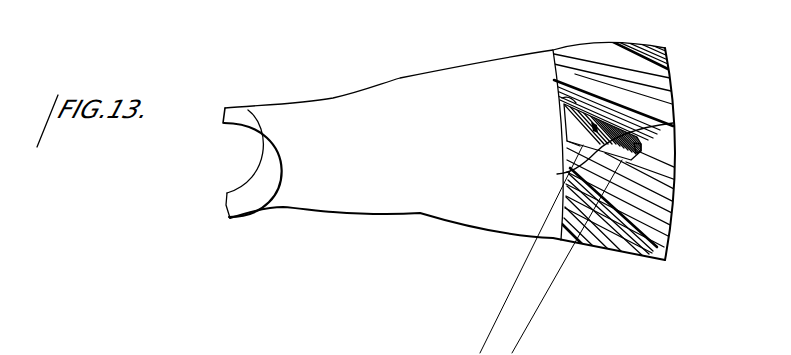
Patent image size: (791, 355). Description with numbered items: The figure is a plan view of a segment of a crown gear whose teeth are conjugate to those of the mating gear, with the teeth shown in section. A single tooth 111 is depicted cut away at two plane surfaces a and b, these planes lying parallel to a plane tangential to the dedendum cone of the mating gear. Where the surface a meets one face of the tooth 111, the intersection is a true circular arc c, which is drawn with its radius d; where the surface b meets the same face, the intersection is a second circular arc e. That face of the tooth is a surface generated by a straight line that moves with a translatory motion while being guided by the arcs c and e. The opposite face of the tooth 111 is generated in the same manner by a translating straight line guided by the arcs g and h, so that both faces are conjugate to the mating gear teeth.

The plane surface a is at (565, 124).
The plane surface b is at (641, 151).
The circular arc c is at (573, 140).
The radius d is at (531, 250).
The circular arc e is at (557, 174).
The circular arc g is at (572, 98).
The circular arc h is at (674, 122).
The tooth 111 is at (714, 179).